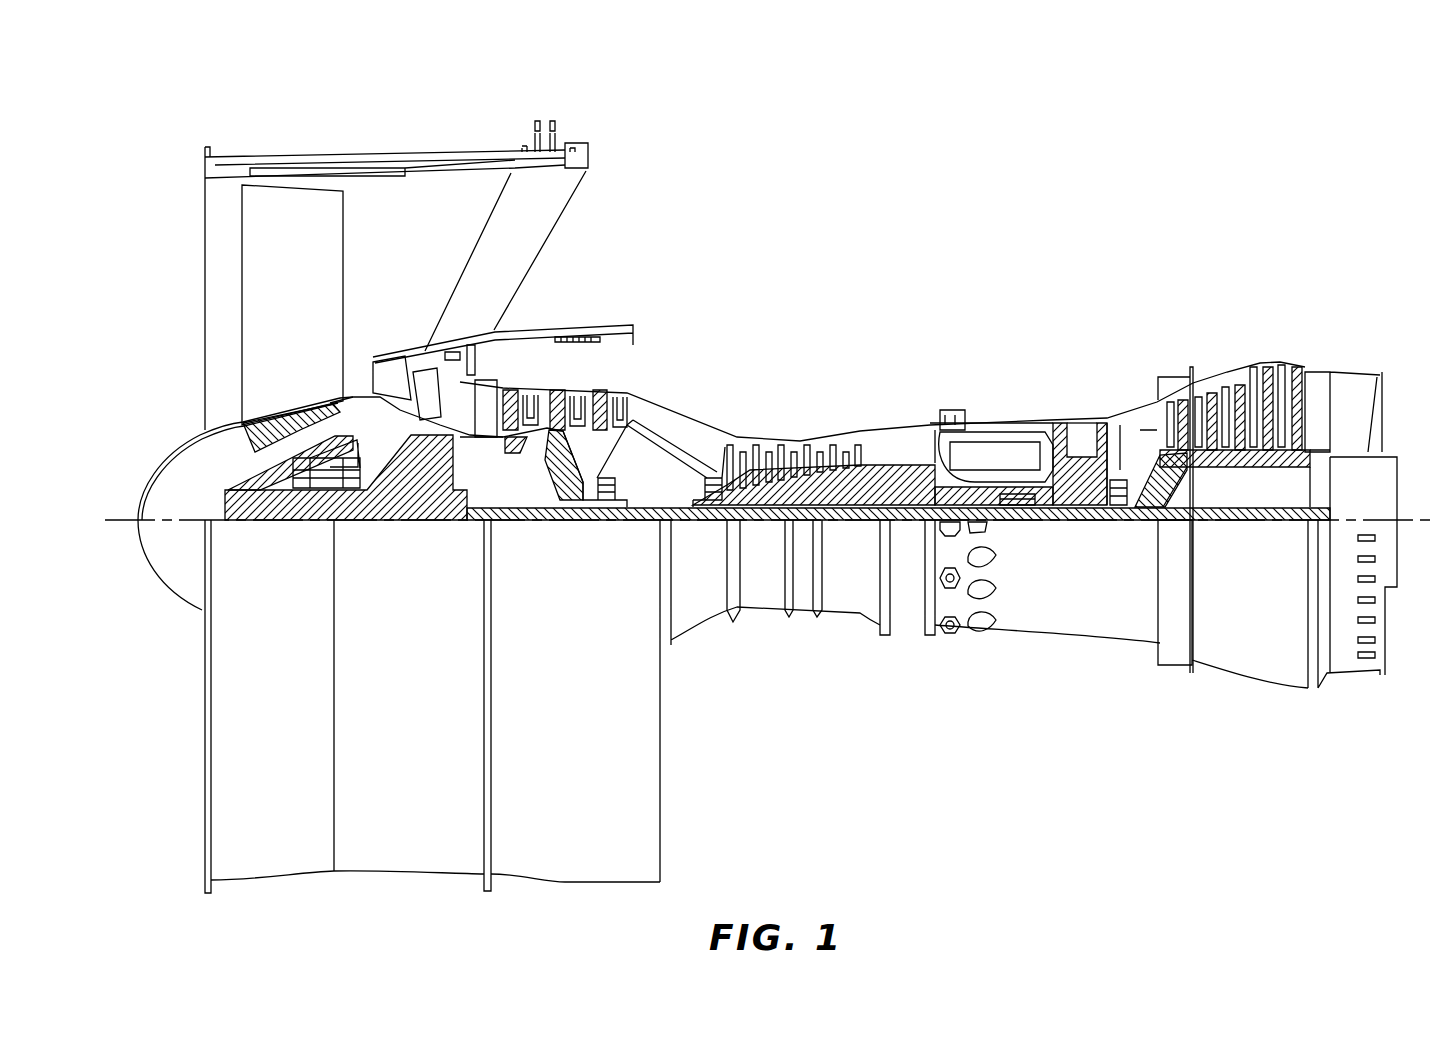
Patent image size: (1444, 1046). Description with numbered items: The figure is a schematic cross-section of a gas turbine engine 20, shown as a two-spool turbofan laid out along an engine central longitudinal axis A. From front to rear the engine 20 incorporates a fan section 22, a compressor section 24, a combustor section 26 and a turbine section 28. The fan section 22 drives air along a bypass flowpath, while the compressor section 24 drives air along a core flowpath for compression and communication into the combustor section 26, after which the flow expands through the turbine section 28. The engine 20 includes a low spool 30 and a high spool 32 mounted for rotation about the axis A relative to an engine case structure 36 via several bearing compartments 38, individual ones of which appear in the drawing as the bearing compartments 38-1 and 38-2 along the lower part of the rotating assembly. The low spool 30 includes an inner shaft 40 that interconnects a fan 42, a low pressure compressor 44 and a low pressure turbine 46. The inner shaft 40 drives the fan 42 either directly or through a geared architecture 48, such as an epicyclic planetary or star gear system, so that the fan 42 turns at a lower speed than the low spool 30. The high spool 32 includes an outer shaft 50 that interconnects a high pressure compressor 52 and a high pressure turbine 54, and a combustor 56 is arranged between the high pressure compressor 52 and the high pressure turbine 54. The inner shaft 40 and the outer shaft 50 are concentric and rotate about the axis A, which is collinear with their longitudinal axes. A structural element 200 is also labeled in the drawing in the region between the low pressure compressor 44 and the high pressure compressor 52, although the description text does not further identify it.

The gas turbine engine 20 is at (1124, 213).
The fan section 22 is at (485, 106).
The compressor section 24 is at (495, 289).
The combustor section 26 is at (940, 289).
The turbine section 28 is at (1315, 289).
The low spool 30 is at (860, 553).
The high spool 32 is at (893, 482).
The engine case structure 36 is at (197, 850).
The bearing compartment 38 is at (1138, 523).
The bearing compartment 38-1 is at (305, 492).
The bearing compartment 38-2 is at (612, 502).
The inner shaft 40 is at (690, 522).
The fan 42 is at (304, 306).
The low pressure compressor 44 is at (578, 402).
The low pressure turbine 46 is at (1240, 392).
The geared architecture 48 is at (430, 540).
The outer shaft 50 is at (1008, 492).
The high pressure compressor 52 is at (860, 455).
The high pressure turbine 54 is at (1052, 420).
The combustor 56 is at (1002, 447).
The mid-turbine frame / strut 200 is at (664, 429).
The engine central longitudinal axis A is at (123, 518).